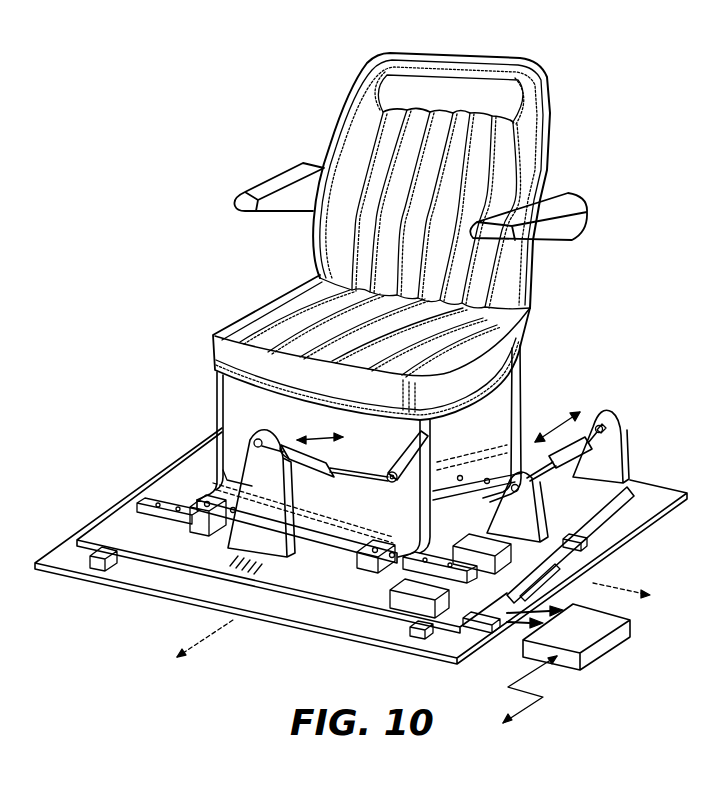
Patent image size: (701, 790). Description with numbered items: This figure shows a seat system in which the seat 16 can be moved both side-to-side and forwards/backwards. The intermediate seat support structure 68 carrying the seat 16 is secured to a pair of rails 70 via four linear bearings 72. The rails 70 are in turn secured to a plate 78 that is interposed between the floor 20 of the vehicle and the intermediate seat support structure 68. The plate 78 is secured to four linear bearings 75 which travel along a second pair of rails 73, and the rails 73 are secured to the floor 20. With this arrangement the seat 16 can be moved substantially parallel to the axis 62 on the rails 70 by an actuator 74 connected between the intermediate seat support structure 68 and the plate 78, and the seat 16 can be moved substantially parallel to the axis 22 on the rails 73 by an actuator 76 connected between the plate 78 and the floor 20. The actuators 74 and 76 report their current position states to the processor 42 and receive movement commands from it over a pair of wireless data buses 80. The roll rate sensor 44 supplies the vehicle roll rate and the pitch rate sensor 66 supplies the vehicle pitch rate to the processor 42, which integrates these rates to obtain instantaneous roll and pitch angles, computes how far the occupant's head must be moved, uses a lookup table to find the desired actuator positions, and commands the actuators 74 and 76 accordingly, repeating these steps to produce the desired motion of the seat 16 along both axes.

The seat 16 is at (352, 104).
The floor 20 is at (73, 543).
The axis 22 is at (177, 657).
The processor 42 is at (607, 643).
The roll rate sensor 44 is at (390, 617).
The axis 62 is at (620, 590).
The pitch rate sensor 66 is at (573, 570).
The intermediate seat support structure 68 is at (522, 366).
The rails 70 is at (177, 507).
The linear bearings 72 is at (207, 527).
The rails 73 is at (100, 570).
The actuator 74 is at (308, 452).
The linear bearings 75 is at (465, 622).
The actuator 76 is at (582, 428).
The plate 78 is at (117, 508).
The wireless data buses 80 is at (543, 697).